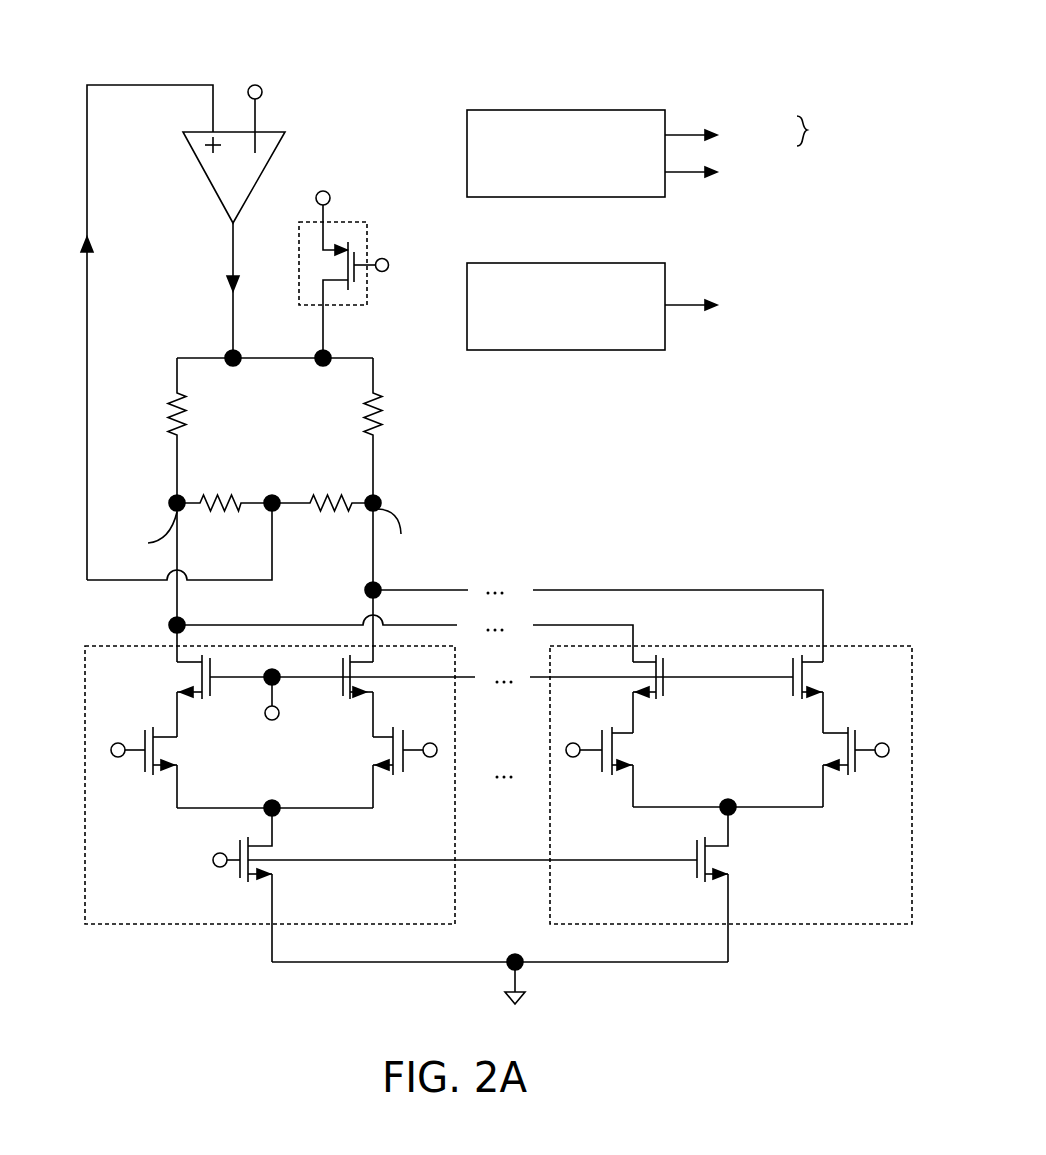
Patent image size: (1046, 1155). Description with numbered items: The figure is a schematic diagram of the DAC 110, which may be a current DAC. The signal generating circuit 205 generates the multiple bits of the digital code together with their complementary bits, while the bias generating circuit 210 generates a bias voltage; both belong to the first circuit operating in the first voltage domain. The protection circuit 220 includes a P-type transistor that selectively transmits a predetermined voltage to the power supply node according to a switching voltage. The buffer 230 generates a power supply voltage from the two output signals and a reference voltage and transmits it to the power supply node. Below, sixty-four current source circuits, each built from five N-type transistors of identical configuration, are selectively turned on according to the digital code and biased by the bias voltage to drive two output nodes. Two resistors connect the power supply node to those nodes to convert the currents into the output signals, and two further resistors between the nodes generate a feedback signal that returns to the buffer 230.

The DAC 110 is at (499, 30).
The buffer 230 is at (214, 178).
The protection circuit 220 is at (367, 293).
The signal generating circuit 205 is at (548, 190).
The bias generating circuit 210 is at (548, 343).